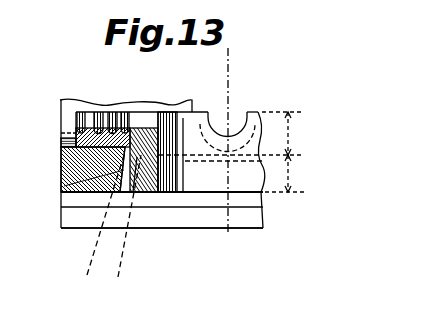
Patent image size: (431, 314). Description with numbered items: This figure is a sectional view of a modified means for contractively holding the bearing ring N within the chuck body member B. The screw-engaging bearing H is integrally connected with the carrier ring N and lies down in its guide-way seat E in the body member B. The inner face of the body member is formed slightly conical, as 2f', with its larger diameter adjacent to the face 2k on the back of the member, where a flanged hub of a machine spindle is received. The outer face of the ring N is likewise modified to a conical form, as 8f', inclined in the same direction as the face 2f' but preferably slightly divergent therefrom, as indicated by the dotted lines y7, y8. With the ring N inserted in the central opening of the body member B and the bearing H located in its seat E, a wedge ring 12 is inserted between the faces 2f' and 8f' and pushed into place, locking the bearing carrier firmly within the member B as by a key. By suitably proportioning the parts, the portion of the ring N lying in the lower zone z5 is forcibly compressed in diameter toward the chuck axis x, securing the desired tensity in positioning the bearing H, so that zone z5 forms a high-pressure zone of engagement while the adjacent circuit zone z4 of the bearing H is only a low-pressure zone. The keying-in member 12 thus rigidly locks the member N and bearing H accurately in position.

The screw-engaging bearing H is at (114, 120).
The bearing-carrier ring N is at (148, 156).
The guide-way E is at (62, 130).
The body member B is at (60, 173).
The conical inner face of the body member 2f' is at (140, 209).
The face on the back of the body member 2k is at (70, 227).
The dotted line indicating inclination y7 is at (88, 268).
The dotted line indicating inclination y8 is at (118, 264).
The conical outer face of the ring 8f' is at (150, 209).
The wedge ring 12 is at (163, 192).
The axis of the chuck x is at (229, 90).
The circuit zone of the bearings z4 is at (282, 133).
The lower zone z5 is at (285, 173).